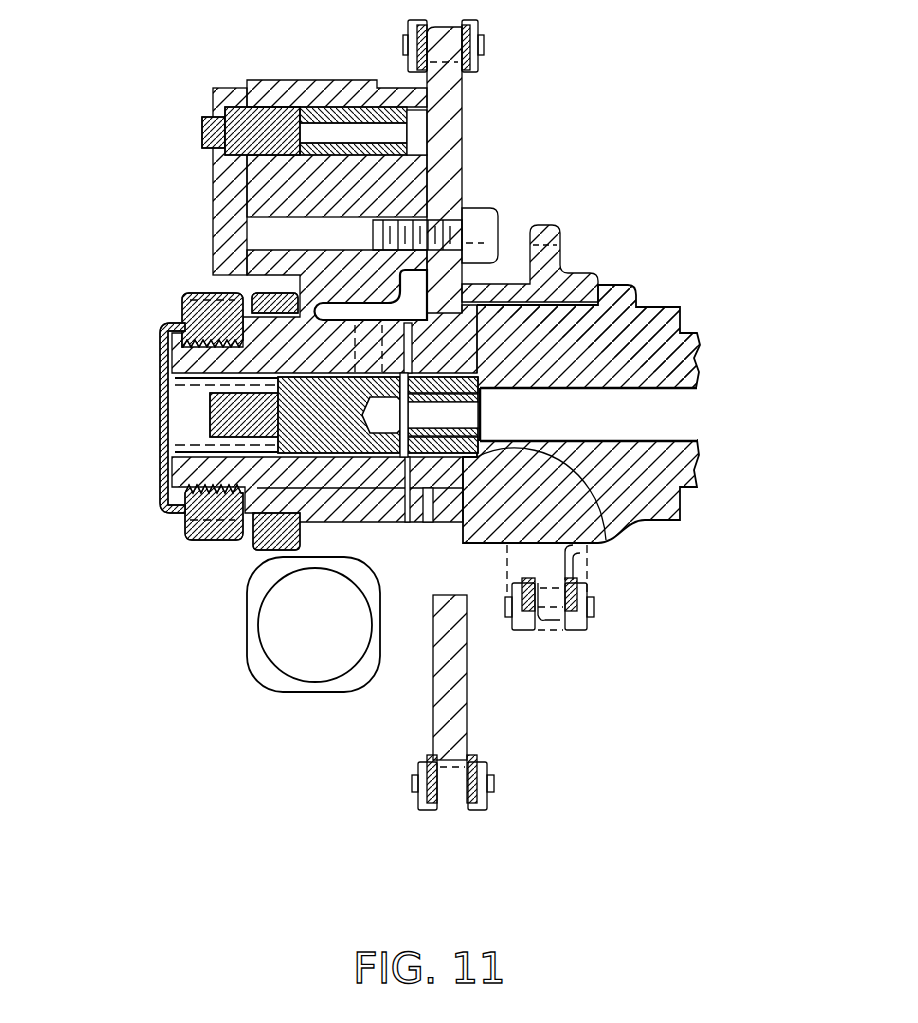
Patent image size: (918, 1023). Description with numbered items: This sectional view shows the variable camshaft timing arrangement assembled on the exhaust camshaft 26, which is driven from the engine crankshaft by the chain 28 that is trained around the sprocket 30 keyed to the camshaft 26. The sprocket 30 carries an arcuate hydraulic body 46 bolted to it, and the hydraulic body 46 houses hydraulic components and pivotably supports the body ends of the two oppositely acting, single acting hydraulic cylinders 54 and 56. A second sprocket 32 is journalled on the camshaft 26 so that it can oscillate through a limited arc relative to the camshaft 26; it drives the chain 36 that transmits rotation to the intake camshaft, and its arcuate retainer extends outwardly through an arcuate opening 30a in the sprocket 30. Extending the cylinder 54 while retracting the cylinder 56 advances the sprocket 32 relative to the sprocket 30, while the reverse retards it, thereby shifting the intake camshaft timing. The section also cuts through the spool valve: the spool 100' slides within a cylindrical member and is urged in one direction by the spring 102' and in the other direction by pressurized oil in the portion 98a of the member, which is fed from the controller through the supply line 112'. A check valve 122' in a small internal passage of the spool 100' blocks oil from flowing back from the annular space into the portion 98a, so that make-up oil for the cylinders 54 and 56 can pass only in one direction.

The exhaust camshaft 26 is at (637, 318).
The chain 28 is at (485, 795).
The sprocket 30 is at (472, 720).
The arcuate opening 30a is at (447, 552).
The sprocket 32 is at (553, 227).
The chain 36 is at (587, 620).
The arcuate hydraulic body 46 is at (217, 92).
The hydraulic cylinder 54 is at (310, 88).
The hydraulic cylinder 56 is at (283, 672).
The portion of the cylindrical member 98a is at (640, 522).
The spool 100' is at (275, 415).
The spring 102' is at (128, 418).
The supply line 112' is at (629, 404).
The check valve 122' is at (395, 470).